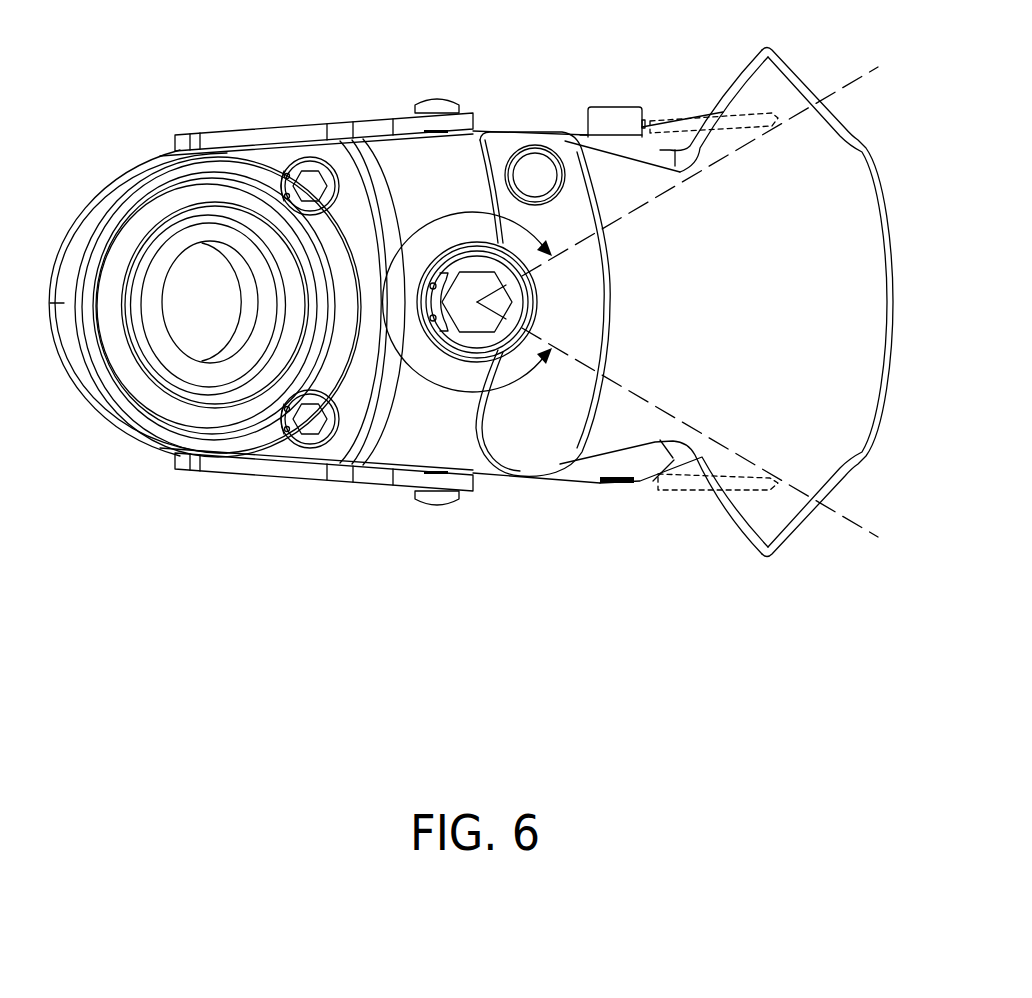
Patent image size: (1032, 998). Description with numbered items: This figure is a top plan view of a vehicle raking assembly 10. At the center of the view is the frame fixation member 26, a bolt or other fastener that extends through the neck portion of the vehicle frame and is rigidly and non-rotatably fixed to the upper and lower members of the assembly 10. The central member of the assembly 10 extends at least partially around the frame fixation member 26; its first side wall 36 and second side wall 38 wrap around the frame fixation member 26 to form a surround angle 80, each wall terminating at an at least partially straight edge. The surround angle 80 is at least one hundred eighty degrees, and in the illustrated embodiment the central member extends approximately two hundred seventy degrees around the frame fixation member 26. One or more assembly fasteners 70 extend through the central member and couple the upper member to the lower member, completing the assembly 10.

The assembly 10 is at (221, 548).
The frame fixation member 26 is at (440, 273).
The first side wall 36 is at (530, 420).
The second side wall 38 is at (537, 170).
The assembly fastener 70 is at (307, 172).
The surround angle 80 is at (478, 136).